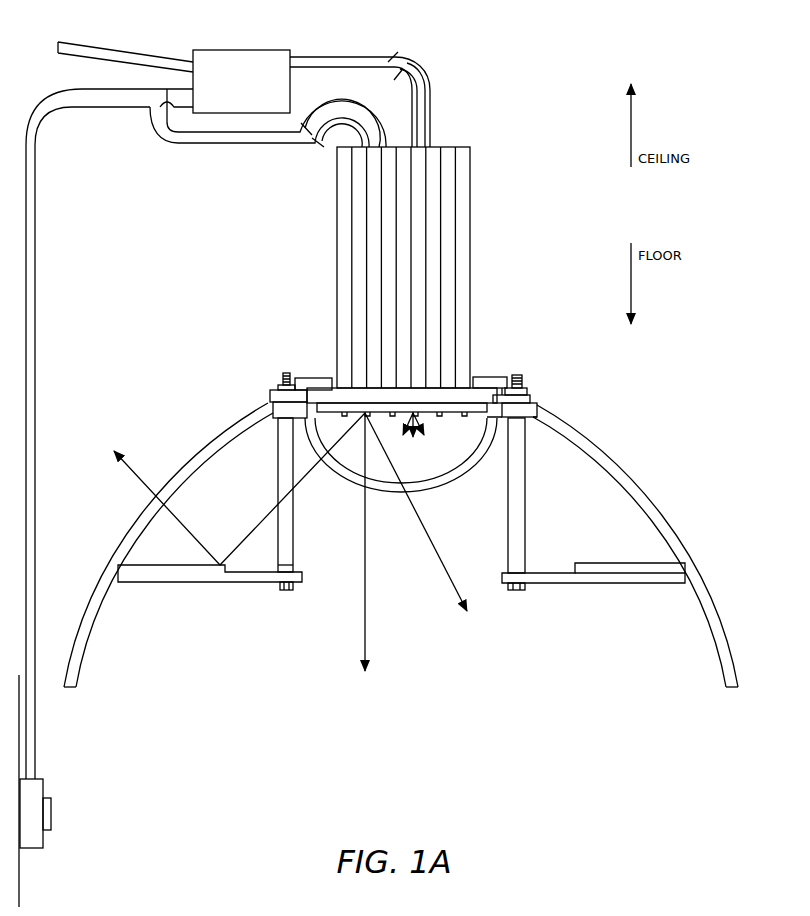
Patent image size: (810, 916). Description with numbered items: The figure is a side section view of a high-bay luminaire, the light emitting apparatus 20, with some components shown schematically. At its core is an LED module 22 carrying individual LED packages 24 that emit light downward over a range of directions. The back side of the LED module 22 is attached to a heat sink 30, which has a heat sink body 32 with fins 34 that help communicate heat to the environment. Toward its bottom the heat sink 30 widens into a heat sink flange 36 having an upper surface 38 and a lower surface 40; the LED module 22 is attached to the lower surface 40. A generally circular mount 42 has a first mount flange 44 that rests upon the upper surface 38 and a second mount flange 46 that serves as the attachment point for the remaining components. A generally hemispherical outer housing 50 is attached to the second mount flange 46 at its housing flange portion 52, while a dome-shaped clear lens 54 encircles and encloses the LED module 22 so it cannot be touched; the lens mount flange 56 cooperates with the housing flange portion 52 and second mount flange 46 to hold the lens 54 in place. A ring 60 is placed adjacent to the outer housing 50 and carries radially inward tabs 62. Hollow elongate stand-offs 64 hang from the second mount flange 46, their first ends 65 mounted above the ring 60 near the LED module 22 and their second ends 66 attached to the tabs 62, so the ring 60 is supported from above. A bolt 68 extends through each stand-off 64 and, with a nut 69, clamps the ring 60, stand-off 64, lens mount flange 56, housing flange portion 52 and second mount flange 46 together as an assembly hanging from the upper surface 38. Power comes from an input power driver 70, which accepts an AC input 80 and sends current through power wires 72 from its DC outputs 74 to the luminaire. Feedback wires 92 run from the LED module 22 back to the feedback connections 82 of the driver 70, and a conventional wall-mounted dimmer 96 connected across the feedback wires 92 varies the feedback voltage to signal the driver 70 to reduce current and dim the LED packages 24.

The light emitting apparatus 20 is at (410, 524).
The LED module 22 is at (447, 410).
The LED packages 24 is at (460, 433).
The heat sink 30 is at (443, 267).
The heat sink body 32 is at (447, 285).
The fins 34 is at (455, 193).
The heat sink flange 36 is at (450, 387).
The upper surface 38 is at (333, 383).
The lower surface 40 is at (273, 401).
The mount 42 is at (514, 372).
The first mount flange 44 is at (478, 375).
The second mount flange 46 is at (528, 398).
The outer housing 50 is at (674, 514).
The housing flange portion 52 is at (528, 408).
The lens 54 is at (440, 489).
The lens mount flange 56 is at (530, 425).
The ring 60 is at (185, 589).
The tabs 62 is at (552, 580).
The stand-offs 64 is at (288, 529).
The first ends 65 is at (295, 572).
The second ends 66 is at (276, 418).
The bolt 68 is at (282, 374).
The nut 69 is at (279, 387).
The input power driver 70 is at (243, 50).
The power wires 72 is at (423, 80).
The DC outputs 74 is at (292, 53).
The AC input 80 is at (110, 48).
The feedback connections 82 is at (187, 116).
The feedback wires 92 is at (325, 130).
The dimmer 96 is at (61, 791).